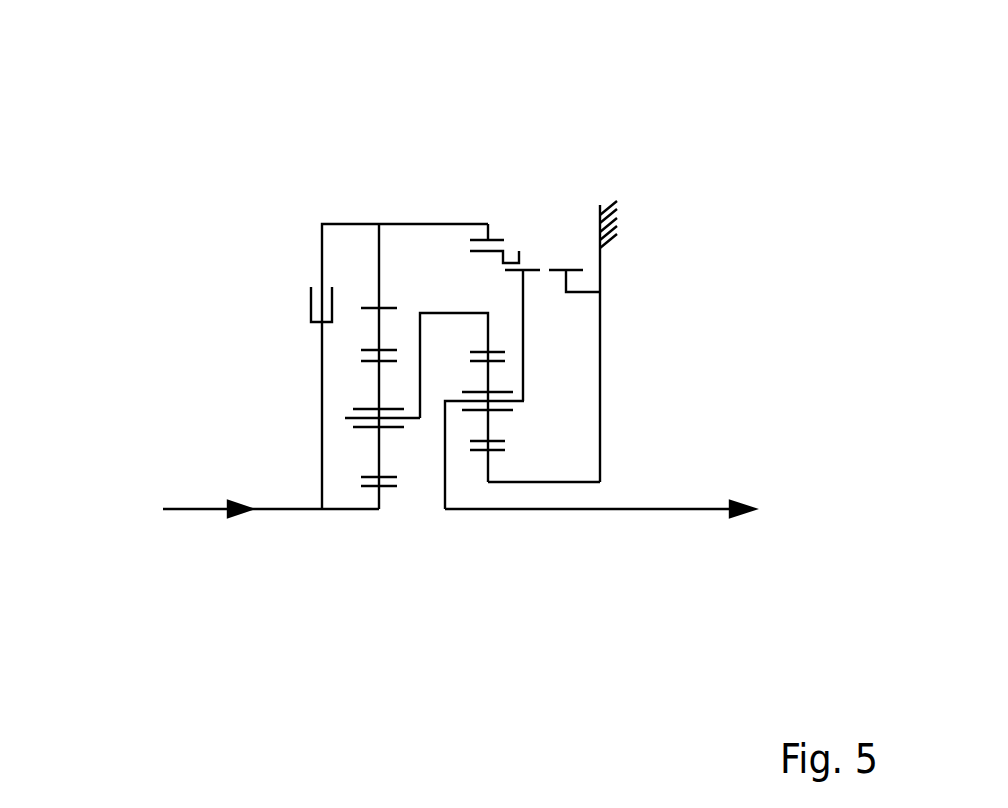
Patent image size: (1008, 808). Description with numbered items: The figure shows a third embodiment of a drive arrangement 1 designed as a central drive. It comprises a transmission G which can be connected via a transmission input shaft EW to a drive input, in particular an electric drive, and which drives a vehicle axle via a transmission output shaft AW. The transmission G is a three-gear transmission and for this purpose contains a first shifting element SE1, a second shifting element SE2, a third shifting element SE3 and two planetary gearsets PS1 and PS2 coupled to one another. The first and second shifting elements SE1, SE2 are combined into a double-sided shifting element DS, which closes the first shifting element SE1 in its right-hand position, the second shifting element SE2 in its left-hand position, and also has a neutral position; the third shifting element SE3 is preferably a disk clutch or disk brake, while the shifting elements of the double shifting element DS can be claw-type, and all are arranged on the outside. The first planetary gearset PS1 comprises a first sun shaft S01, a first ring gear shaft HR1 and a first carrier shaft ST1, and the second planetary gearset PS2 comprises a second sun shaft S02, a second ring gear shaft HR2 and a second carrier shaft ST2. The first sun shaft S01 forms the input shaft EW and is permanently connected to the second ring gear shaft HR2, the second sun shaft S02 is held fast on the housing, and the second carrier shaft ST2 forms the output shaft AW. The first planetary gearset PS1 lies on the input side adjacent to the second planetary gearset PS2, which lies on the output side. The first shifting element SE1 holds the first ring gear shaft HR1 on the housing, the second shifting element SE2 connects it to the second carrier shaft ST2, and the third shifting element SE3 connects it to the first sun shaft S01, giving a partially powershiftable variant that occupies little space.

The transmission G is at (242, 140).
The drive arrangement 1 is at (708, 170).
The first ring gear shaft HR1 is at (347, 224).
The second ring gear shaft HR2 is at (438, 313).
The double shifting element DS is at (614, 105).
The first shifting element SE1 is at (566, 217).
The second shifting element SE2 is at (523, 217).
The third shifting element SE3 is at (308, 303).
The first planetary gearset PS1 is at (378, 537).
The second planetary gearset PS2 is at (488, 538).
The first carrier shaft ST1 is at (410, 418).
The second carrier shaft ST2 is at (633, 510).
The first sun shaft S01 is at (345, 512).
The second sun shaft S02 is at (561, 482).
The transmission input shaft EW is at (203, 510).
The transmission output shaft AW is at (703, 510).